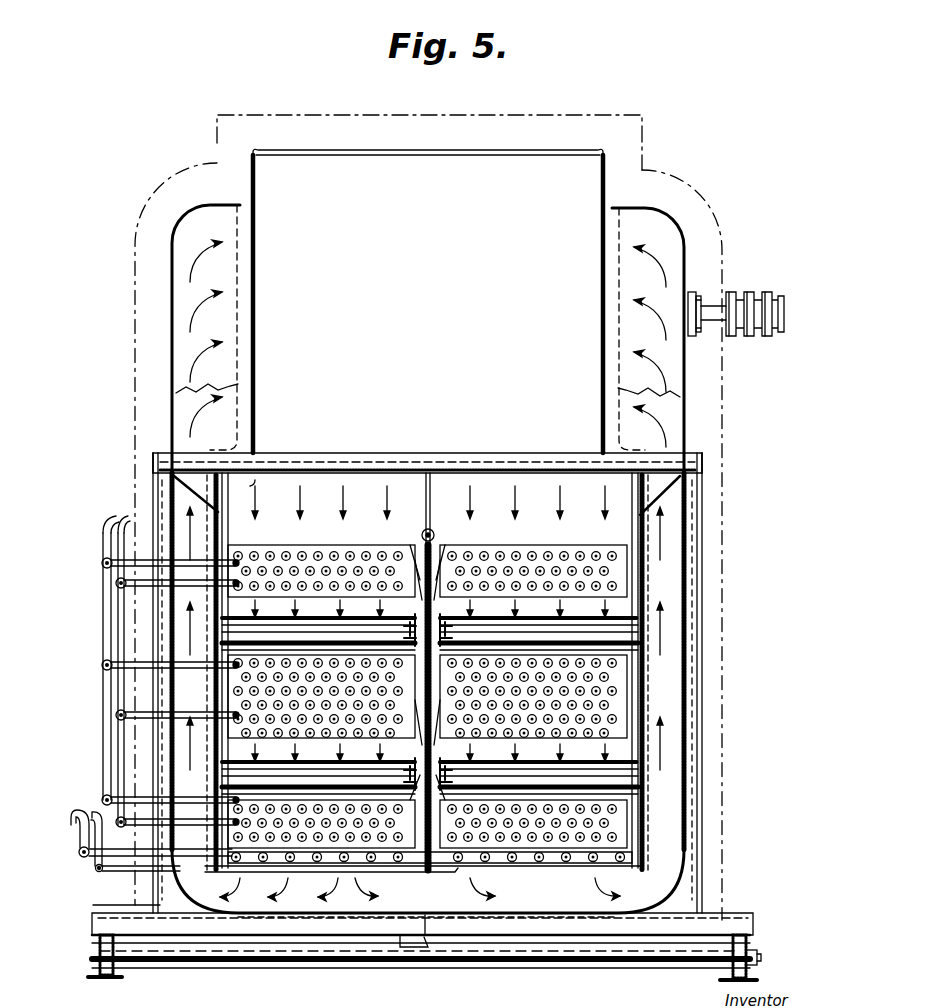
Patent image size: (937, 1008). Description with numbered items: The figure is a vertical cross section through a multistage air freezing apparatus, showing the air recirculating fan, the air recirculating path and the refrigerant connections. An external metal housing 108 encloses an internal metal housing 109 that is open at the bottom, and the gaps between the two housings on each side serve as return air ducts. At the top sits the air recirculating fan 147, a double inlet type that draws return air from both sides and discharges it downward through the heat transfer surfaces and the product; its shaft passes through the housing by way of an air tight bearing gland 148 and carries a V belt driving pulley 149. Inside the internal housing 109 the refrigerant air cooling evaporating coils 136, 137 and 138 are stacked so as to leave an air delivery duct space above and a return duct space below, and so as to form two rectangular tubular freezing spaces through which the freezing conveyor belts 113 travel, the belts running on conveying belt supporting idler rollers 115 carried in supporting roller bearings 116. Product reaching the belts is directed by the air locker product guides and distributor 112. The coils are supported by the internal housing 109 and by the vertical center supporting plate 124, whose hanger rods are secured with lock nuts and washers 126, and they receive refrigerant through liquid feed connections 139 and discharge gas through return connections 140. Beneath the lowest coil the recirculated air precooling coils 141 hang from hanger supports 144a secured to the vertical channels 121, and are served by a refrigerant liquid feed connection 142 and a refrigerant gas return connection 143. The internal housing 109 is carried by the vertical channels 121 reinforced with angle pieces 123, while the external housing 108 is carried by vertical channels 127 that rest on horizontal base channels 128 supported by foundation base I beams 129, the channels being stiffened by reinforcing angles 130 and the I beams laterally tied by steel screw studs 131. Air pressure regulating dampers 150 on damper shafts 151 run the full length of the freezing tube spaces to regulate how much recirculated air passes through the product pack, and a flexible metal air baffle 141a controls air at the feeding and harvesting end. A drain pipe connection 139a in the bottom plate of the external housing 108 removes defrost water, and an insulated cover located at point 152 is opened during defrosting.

The external metal housing 108 is at (168, 378).
The internal metal housing 109 is at (240, 523).
The air locker product guides and distributor 112 is at (422, 682).
The freezing conveyor belts 113 is at (430, 696).
The conveying belt supporting idler rollers 115 is at (406, 676).
The supporting roller bearings 116 is at (730, 766).
The vertical channels 121 is at (220, 520).
The angle pieces 123 is at (205, 503).
The vertical center supporting plate 124 is at (432, 545).
The lock nuts and washers 126 is at (436, 462).
The vertical channels 127 is at (155, 884).
The horizontal base channels 128 is at (92, 927).
The foundation base I beams 129 is at (95, 974).
The reinforcing angles 130 is at (152, 462).
The steel screw studs 131 is at (98, 950).
The refrigerant air cooling evaporating coil 136 is at (300, 548).
The refrigerant air cooling evaporating coil 137 is at (232, 700).
The refrigerant air cooling evaporating coil 138 is at (446, 866).
The refrigerant liquid feed connections 139 is at (117, 585).
The drain pipe connection 139a is at (415, 948).
The refrigerant gas return connections 140 is at (101, 566).
The recirculated air precooling coils 141 is at (406, 894).
The flexible metal air baffle 141a is at (420, 893).
The refrigerant liquid feed connection 142 is at (96, 872).
The refrigerant gas return connection 143 is at (79, 855).
The hanger supports 144a is at (690, 884).
The air recirculating fan 147 is at (432, 152).
The air tight bearing gland 148 is at (702, 292).
The V belt driving pulley 149 is at (760, 292).
The air pressure regulating dampers 150 is at (410, 757).
The damper shafts 151 is at (420, 550).
The insulated cover location 152 is at (136, 320).